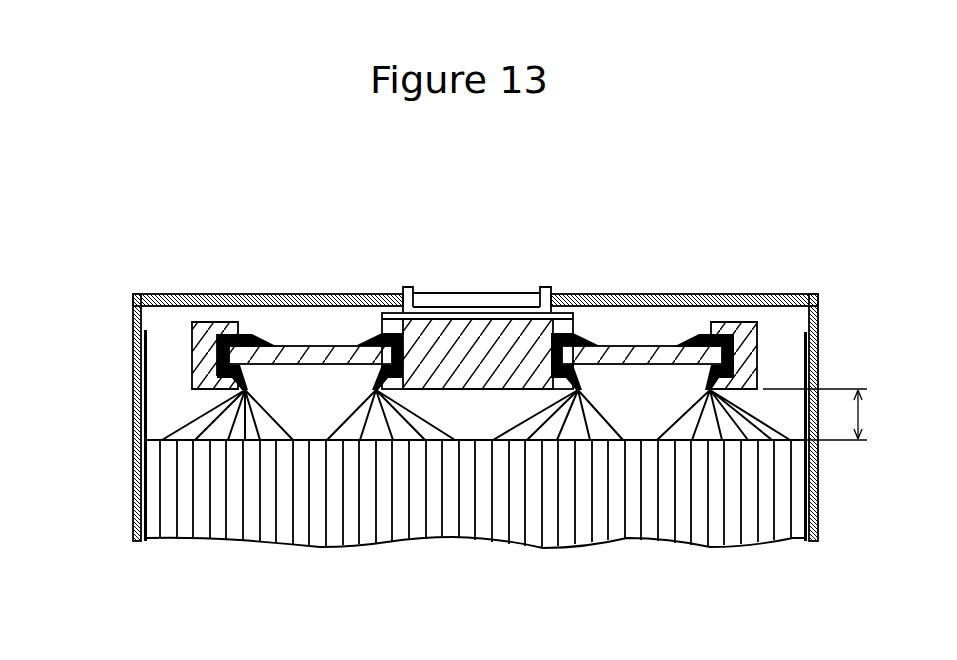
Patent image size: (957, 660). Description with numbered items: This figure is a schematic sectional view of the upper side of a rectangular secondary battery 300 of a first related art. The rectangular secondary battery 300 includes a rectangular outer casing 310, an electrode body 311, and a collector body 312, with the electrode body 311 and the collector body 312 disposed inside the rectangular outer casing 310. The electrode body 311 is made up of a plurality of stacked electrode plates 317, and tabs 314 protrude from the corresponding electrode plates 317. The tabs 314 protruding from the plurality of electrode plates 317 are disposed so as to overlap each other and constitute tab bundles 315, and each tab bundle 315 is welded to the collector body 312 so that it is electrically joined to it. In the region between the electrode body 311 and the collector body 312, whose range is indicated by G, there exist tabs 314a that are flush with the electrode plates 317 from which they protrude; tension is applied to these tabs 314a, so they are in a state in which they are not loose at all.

The rectangular secondary battery 300 is at (509, 241).
The rectangular outer casing 310 is at (133, 448).
The electrode body 311 is at (318, 527).
The collector body 312 is at (317, 346).
The tabs 314 is at (353, 405).
The tabs flush with the electrode plates 314a is at (242, 430).
The tab bundles 315 is at (245, 337).
The electrode plates 317 is at (385, 527).